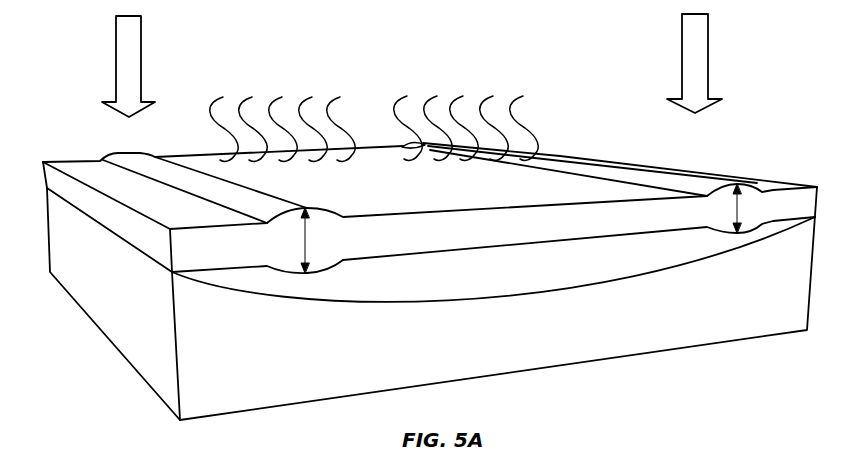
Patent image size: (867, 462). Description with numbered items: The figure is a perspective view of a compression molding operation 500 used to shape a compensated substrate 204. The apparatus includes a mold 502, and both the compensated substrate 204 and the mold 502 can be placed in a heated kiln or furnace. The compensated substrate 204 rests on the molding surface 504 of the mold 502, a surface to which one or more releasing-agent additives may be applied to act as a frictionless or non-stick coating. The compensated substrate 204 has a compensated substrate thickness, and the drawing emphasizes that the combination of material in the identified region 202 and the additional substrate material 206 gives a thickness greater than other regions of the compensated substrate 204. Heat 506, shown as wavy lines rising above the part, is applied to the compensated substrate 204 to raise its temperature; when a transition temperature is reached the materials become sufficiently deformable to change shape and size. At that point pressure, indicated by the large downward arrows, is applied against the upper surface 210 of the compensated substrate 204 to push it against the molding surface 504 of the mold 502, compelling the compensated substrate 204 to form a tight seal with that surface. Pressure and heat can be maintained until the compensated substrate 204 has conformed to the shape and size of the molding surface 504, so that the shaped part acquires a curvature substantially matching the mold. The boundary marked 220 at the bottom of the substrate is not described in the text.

The compression molding operation 500 is at (365, 88).
The mold 502 is at (430, 291).
The molding surface 504 is at (493, 259).
The identified region 202 is at (430, 216).
The bottom surface of substrate 220 is at (385, 255).
The compensated substrate 204 is at (431, 195).
The upper surface 210 is at (234, 168).
The additional substrate material 206 is at (757, 181).
The heat 506 is at (374, 128).